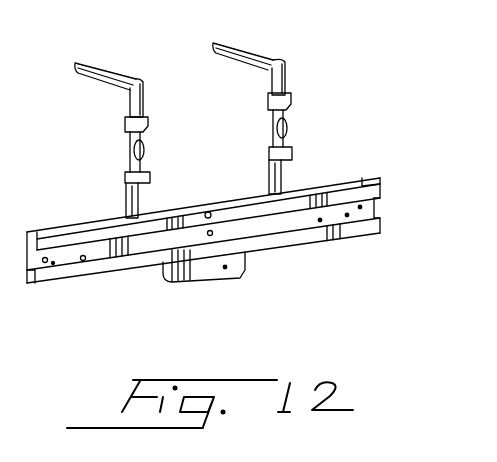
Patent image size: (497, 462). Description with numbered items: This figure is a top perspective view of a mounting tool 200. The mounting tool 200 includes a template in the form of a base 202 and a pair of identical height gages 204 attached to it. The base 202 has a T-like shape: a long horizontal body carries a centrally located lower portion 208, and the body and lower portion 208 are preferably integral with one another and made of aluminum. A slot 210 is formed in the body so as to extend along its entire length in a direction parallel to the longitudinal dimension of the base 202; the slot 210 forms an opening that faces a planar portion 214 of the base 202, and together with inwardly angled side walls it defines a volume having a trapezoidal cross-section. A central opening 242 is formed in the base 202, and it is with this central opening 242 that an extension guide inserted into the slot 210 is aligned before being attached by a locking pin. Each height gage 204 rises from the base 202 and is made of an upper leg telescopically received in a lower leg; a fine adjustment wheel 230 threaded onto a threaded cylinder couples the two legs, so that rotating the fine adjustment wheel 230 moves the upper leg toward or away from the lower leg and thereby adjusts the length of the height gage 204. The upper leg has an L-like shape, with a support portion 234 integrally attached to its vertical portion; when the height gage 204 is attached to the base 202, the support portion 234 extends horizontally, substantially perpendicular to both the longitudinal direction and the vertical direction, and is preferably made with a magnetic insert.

The mounting tool 200 is at (235, 163).
The base 202 is at (382, 186).
The height gage 204 is at (268, 68).
The lower portion 208 is at (240, 268).
The slot 210 is at (72, 266).
The planar portion 214 is at (96, 231).
The fine adjustment wheel 230 is at (130, 157).
The support portion 234 is at (216, 44).
The central opening 242 is at (209, 212).